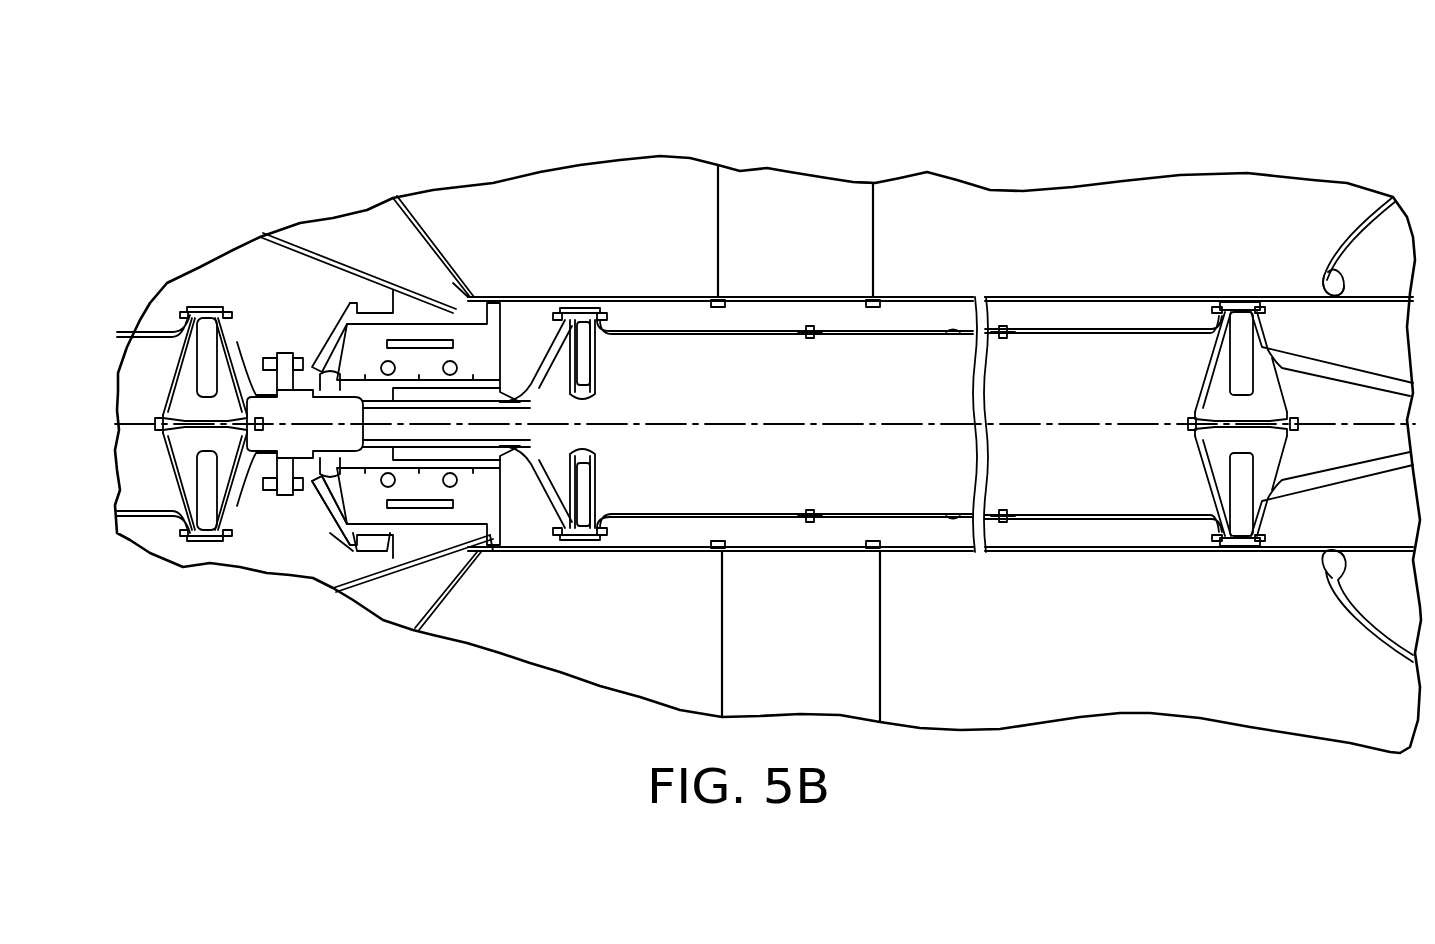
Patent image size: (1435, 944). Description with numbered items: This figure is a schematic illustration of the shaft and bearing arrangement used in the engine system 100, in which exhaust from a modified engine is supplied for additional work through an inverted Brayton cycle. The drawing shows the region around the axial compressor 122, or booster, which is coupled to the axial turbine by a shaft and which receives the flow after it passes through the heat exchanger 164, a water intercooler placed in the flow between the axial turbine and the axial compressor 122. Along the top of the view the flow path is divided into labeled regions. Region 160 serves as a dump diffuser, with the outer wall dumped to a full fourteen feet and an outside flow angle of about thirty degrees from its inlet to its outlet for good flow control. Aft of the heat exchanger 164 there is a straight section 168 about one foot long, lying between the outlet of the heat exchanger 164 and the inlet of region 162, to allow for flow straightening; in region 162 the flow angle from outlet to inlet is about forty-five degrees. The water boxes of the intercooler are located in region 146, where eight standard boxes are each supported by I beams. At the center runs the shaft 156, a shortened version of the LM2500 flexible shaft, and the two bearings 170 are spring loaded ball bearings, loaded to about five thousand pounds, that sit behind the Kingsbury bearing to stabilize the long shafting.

The engine system 100 is at (768, 397).
The axial compressor 122 is at (1316, 244).
The region 146 is at (1094, 263).
The shaft 156 is at (150, 332).
The region 160 is at (622, 259).
The region 162 is at (952, 263).
The heat exchanger 164 is at (770, 193).
The straight section 168 is at (849, 174).
The bearings 170 is at (331, 518).